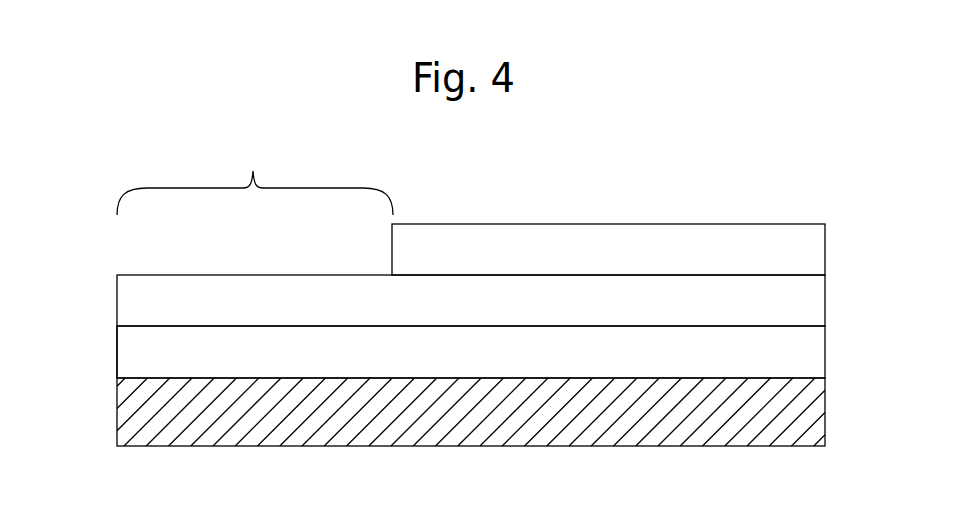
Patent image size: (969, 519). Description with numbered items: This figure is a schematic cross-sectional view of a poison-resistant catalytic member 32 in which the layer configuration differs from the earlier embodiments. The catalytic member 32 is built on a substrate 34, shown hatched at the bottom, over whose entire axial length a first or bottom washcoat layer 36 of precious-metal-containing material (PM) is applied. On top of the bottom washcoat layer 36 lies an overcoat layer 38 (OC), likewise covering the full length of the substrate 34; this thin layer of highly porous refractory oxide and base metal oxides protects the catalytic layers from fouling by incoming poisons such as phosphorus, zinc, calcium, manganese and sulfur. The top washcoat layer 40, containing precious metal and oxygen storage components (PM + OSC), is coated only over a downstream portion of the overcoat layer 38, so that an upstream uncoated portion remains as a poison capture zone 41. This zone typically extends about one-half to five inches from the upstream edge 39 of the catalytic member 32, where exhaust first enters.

The catalytic member 32 is at (108, 188).
The substrate 34 is at (730, 422).
The bottom washcoat layer 36 is at (813, 353).
The overcoat layer 38 is at (813, 303).
The upstream edge 39 is at (117, 350).
The top washcoat layer 40 is at (755, 242).
The poison capture zone 41 is at (255, 179).